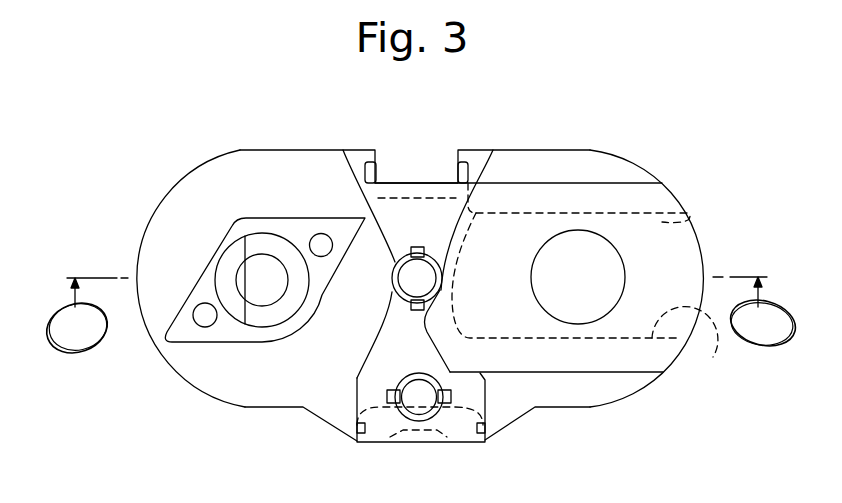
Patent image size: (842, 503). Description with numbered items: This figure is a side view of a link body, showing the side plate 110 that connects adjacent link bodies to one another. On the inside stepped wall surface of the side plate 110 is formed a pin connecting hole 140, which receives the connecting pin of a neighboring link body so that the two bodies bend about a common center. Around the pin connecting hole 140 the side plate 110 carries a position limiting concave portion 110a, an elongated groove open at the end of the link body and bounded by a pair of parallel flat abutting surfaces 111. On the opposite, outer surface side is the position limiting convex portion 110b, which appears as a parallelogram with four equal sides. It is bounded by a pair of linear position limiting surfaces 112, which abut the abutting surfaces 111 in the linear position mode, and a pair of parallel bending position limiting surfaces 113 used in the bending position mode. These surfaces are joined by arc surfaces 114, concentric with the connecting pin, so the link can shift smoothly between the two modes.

The side plate 110 is at (152, 189).
The position limiting concave portion 110a is at (670, 258).
The position limiting convex portion 110b is at (182, 310).
The abutting surface 111 is at (693, 218).
The linear position limiting surface 112 is at (295, 218).
The bending position limiting surface 113 is at (192, 273).
The arc surface 114 is at (240, 220).
The pin connecting hole 140 is at (573, 230).